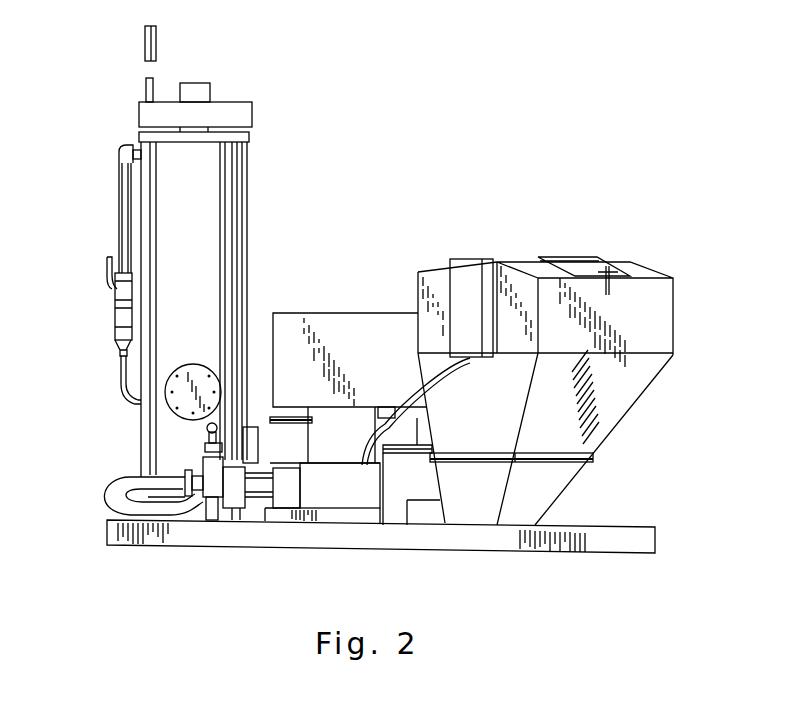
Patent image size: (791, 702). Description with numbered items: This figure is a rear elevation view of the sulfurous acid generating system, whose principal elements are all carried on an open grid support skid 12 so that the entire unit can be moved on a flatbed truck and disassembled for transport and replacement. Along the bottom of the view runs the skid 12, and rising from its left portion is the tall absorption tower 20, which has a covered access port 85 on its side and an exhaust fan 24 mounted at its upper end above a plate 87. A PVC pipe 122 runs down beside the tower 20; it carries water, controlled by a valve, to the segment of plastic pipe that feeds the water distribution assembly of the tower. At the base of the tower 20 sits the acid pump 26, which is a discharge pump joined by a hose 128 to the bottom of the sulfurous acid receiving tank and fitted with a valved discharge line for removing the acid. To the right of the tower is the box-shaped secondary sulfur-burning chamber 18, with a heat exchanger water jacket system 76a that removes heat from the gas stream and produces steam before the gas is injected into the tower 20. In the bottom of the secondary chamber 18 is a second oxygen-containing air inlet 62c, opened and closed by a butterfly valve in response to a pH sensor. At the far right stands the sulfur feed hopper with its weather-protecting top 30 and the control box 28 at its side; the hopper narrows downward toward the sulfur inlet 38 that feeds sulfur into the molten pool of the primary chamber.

The open grid support skid 12 is at (333, 548).
The secondary chamber 18 is at (300, 314).
The absorption tower 20 is at (247, 177).
The exhaust fan 24 is at (252, 108).
The acid pump 26 is at (236, 520).
The control box 28 is at (467, 259).
The top 30 is at (582, 257).
The sulfur inlet 38 is at (472, 515).
The second oxygen-containing air inlet 62c is at (378, 418).
The heat exchanger water jacket system 76a is at (256, 427).
The covered access port 85 is at (166, 391).
The mounting plate 87 is at (250, 143).
The PVC pipe 122 is at (119, 210).
The hose 128 is at (103, 484).